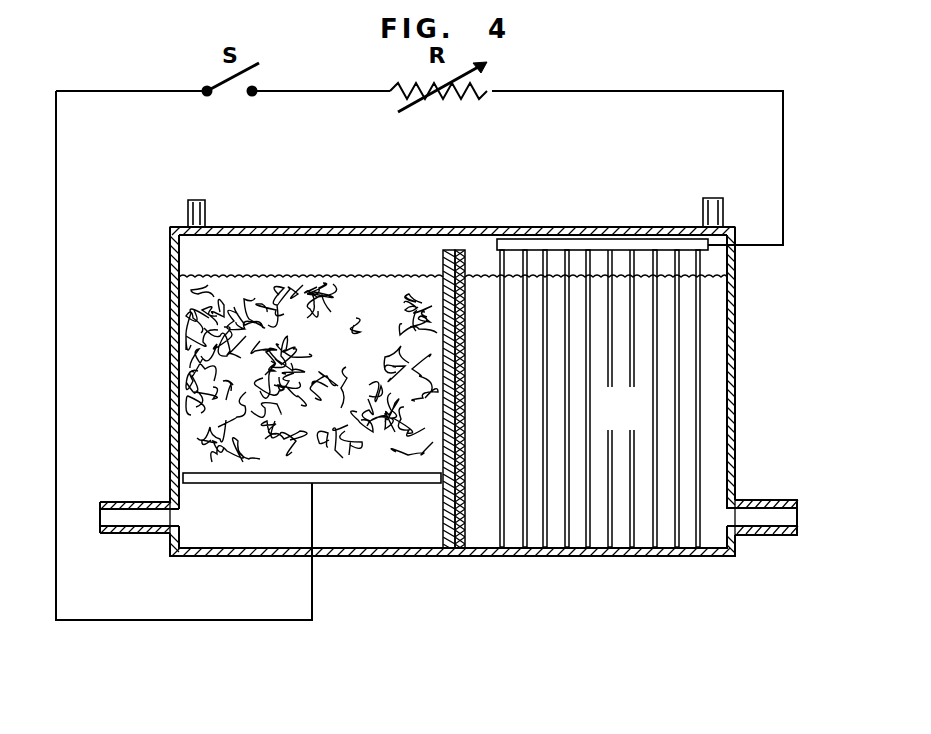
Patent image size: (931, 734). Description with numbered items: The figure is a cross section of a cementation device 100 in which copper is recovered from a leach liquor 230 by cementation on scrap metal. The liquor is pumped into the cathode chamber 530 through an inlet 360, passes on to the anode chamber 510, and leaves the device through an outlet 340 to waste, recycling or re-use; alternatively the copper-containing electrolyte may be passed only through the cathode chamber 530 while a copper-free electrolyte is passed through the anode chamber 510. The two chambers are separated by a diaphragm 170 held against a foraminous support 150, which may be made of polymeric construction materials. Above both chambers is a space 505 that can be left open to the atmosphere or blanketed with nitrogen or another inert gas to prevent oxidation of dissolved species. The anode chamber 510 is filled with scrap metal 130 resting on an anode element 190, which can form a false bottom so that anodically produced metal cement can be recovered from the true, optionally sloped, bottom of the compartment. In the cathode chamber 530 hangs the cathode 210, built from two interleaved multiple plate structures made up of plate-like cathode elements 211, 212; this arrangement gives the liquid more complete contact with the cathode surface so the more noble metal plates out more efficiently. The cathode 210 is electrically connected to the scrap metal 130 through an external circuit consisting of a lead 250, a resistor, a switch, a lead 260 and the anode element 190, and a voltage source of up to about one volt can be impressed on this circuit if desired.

The cementation device 100 is at (752, 395).
The scrap metal 130 is at (311, 310).
The foraminous support 150 is at (448, 250).
The diaphragm 170 is at (464, 250).
The anode element 190 is at (364, 485).
The cathode 210 is at (601, 248).
The electrode rods 211 is at (645, 573).
The plate-like cathode elements 212 is at (707, 573).
The leach liquor 230 is at (707, 338).
The lead 250 is at (783, 168).
The lead 260 is at (56, 213).
The outlet 340 is at (124, 520).
The inlet 360 is at (768, 515).
The space 505 is at (262, 247).
The anode chamber 510 is at (296, 443).
The cathode chamber 530 is at (642, 418).